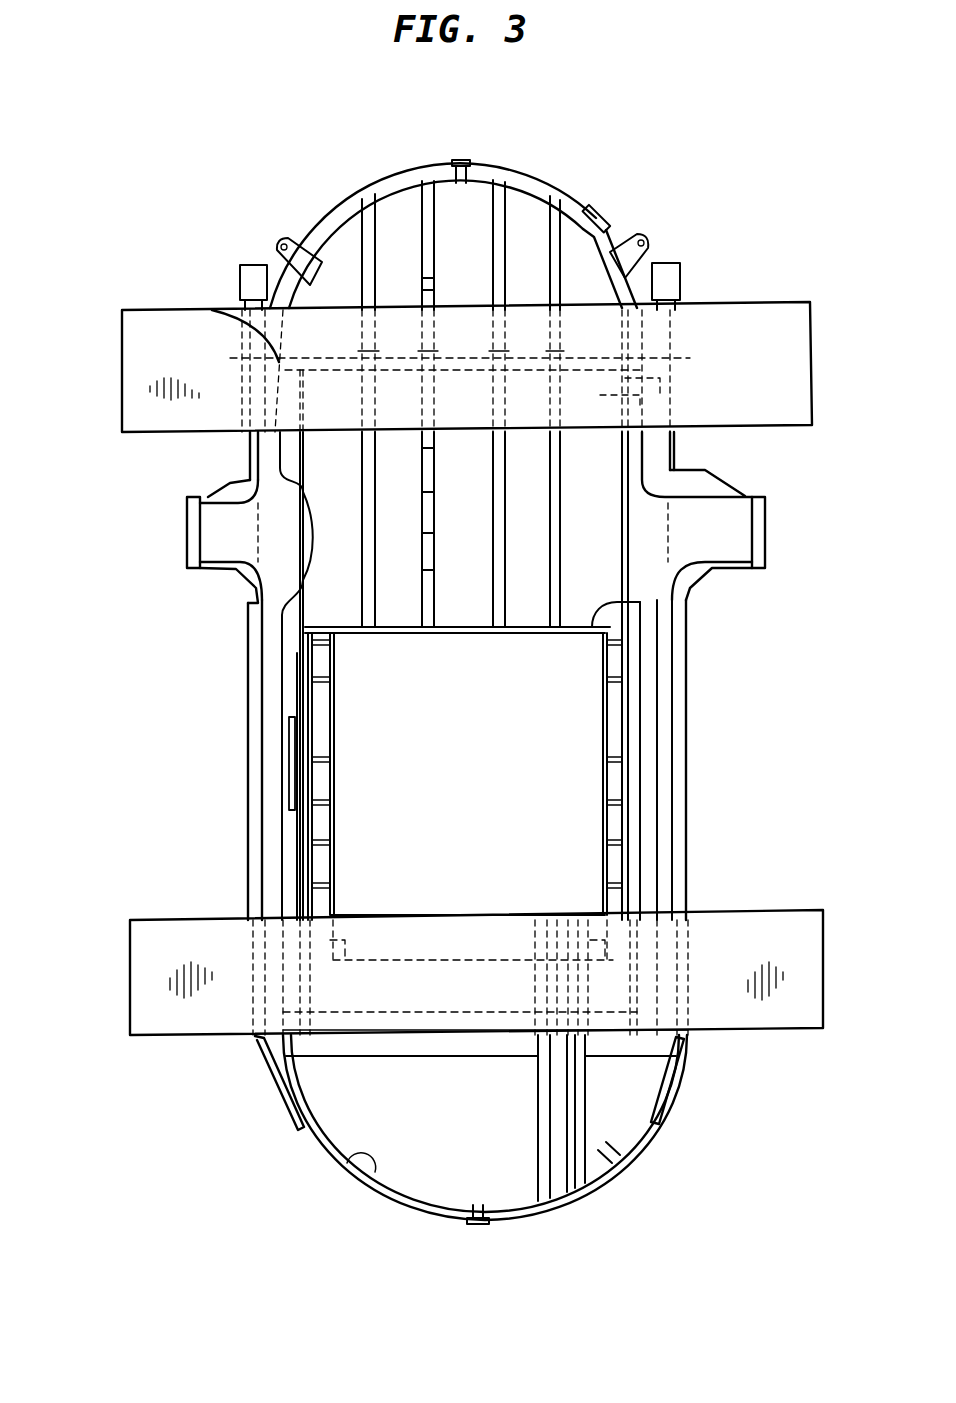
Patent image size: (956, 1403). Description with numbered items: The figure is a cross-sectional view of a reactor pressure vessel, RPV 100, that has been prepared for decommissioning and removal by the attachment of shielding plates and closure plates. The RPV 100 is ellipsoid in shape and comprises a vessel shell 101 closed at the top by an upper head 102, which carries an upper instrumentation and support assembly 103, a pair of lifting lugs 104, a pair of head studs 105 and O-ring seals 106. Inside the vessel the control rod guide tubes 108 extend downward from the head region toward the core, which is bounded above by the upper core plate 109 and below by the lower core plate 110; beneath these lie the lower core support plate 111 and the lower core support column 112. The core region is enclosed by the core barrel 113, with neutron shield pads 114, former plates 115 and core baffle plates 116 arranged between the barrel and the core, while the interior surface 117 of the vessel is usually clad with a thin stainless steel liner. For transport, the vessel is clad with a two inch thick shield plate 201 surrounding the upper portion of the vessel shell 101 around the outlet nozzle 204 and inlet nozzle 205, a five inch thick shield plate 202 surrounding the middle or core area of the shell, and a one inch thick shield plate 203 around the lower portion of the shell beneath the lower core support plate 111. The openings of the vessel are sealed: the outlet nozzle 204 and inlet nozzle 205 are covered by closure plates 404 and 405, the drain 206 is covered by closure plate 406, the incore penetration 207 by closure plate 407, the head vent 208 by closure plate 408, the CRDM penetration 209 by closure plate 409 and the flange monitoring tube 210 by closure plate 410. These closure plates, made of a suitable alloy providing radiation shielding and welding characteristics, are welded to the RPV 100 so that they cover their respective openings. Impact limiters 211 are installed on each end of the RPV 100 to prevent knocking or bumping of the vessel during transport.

The reactor pressure vessel 100 is at (410, 1264).
The vessel shell 101 is at (685, 847).
The upper head 102 is at (368, 190).
The upper instrumentation and support assembly 103 is at (357, 247).
The lifting lugs 104 is at (642, 238).
The head studs 105 is at (678, 268).
The O-ring seals 106 is at (228, 316).
The control rod guide tubes 108 is at (420, 508).
The upper core plate 109 is at (628, 604).
The lower core plate 110 is at (553, 960).
The lower core support plate 111 is at (648, 1046).
The lower core support column 112 is at (536, 1086).
The core barrel 113 is at (642, 770).
The neutron shield pads 114 is at (296, 702).
The former plates 115 is at (303, 817).
The core baffle plates 116 is at (312, 862).
The interior surface 117 is at (355, 1160).
The shield plate 201 is at (673, 443).
The shield plate 202 is at (690, 697).
The shield plate 203 is at (288, 1113).
The outlet nozzle 204 is at (215, 538).
The inlet nozzle 205 is at (740, 529).
The drain 206 is at (478, 1205).
The incore penetration 207 is at (608, 1150).
The head vent 208 is at (461, 176).
The CRDM penetration 209 is at (587, 232).
The flange monitoring tube 210 is at (678, 403).
The impact limiter 211 is at (755, 302).
The closure plate 404 is at (195, 500).
The closure plate 405 is at (760, 566).
The closure plate 406 is at (480, 1228).
The closure plate 407 is at (622, 1161).
The closure plate 408 is at (460, 160).
The closure plate 409 is at (600, 210).
The closure plate 410 is at (692, 369).